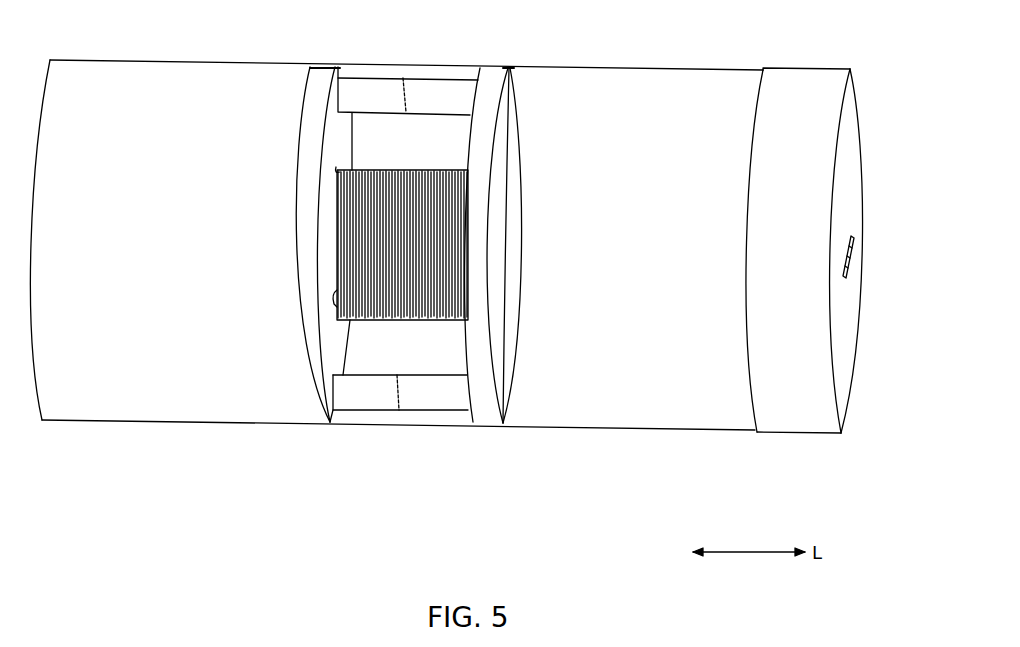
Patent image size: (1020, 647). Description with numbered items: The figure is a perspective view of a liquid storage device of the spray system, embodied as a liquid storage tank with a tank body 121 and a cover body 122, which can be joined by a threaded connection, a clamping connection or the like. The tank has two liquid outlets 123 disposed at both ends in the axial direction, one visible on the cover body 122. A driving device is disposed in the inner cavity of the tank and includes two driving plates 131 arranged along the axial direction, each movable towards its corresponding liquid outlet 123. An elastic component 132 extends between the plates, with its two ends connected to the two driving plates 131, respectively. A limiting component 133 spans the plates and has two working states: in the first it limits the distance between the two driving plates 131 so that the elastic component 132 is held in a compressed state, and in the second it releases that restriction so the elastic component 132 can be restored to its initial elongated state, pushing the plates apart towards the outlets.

The tank body 121 is at (630, 420).
The cover body 122 is at (805, 70).
The liquid outlet 123 is at (848, 261).
The driving plate 131 is at (327, 67).
The elastic component 132 is at (337, 318).
The limiting component 133 is at (412, 80).